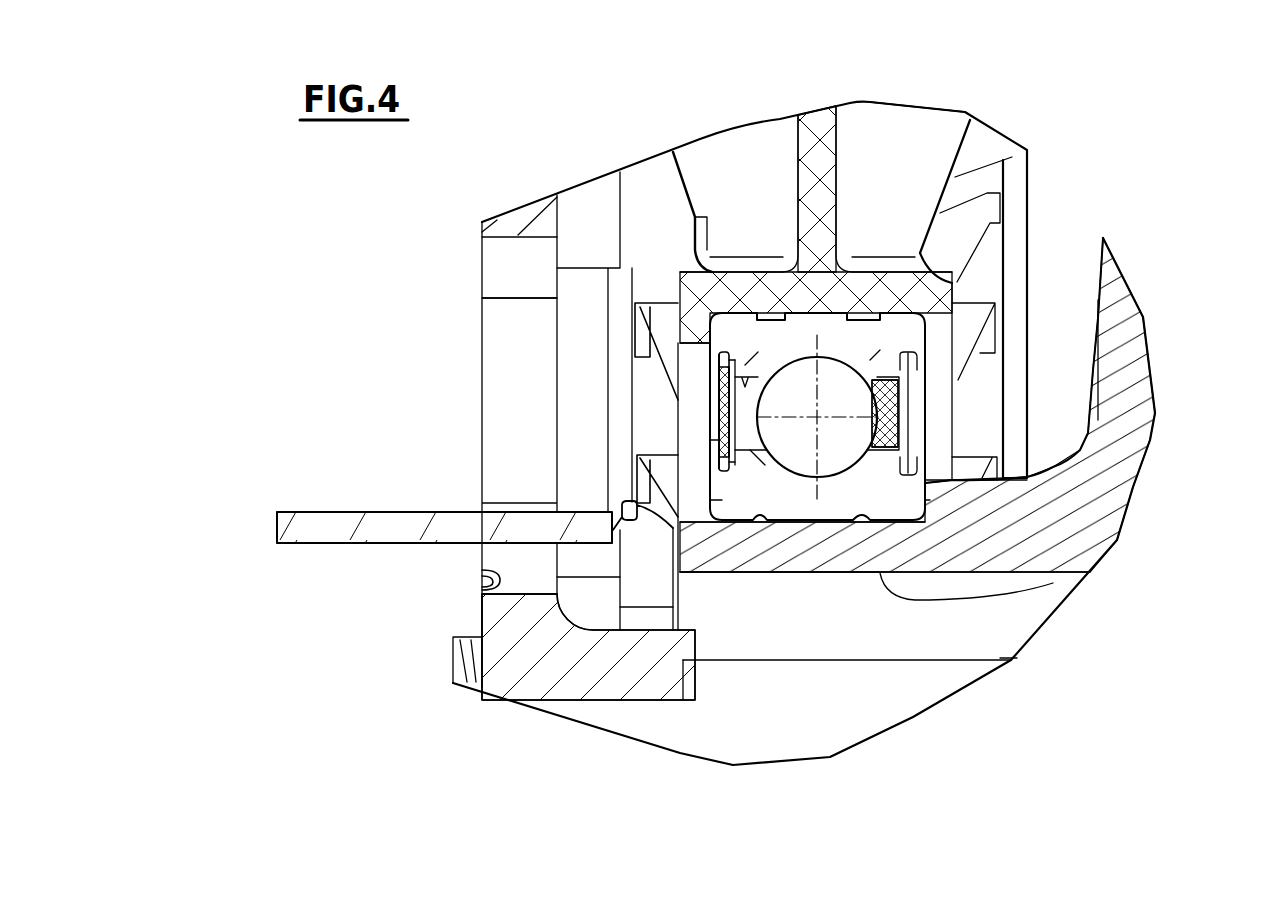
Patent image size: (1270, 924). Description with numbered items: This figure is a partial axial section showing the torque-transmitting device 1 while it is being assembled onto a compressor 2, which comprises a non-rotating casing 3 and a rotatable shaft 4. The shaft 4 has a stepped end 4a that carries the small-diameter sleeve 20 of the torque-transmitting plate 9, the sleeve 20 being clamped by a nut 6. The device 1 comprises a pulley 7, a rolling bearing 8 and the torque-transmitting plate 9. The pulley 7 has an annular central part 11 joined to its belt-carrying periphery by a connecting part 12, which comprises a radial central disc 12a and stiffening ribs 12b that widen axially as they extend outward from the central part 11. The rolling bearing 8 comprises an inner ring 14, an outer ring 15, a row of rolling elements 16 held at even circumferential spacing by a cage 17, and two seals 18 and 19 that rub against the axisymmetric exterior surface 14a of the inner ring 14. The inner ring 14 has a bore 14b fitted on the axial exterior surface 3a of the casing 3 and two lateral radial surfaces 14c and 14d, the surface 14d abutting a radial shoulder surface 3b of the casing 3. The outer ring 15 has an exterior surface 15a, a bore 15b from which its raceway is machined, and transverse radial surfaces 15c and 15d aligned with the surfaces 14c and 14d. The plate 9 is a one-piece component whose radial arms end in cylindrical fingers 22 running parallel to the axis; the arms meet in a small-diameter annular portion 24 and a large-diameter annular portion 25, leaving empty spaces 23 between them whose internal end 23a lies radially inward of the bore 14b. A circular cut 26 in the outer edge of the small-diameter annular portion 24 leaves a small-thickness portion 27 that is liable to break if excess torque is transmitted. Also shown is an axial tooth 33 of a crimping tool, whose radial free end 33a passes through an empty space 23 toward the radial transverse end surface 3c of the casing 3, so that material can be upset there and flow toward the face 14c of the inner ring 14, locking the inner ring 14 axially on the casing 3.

The torque-transmitting device 1 is at (958, 98).
The compressor 2 is at (1125, 278).
The casing 3 is at (1133, 345).
The axial exterior surface 3a is at (870, 590).
The radial surface 3b is at (925, 522).
The radial transverse surface 3c is at (652, 595).
The shaft 4 is at (917, 700).
The stepped end 4a is at (590, 678).
The nut 6 is at (467, 683).
The pulley 7 is at (1010, 215).
The rolling bearing 8 is at (928, 412).
The torque-transmitting plate 9 is at (482, 367).
The annular central part 11 is at (700, 297).
The connecting part 12 is at (843, 122).
The radial central disc 12a is at (820, 178).
The stiffening ribs 12b is at (710, 153).
The inner ring 14 is at (1083, 453).
The axisymmetric exterior surface 14a is at (748, 520).
The bore 14b is at (1053, 583).
The lateral radial surface 14c is at (708, 495).
The lateral radial surface 14d is at (927, 500).
The outer ring 15 is at (930, 338).
The exterior surface 15a is at (835, 330).
The bore 15b is at (742, 360).
The transverse radial surface 15c is at (718, 352).
The transverse radial surface 15d is at (893, 338).
The rolling elements 16 is at (765, 478).
The cage 17 is at (832, 445).
The seal 18 is at (720, 417).
The seal 19 is at (890, 445).
The small-diameter sleeve 20 is at (541, 683).
The fingers 22 is at (643, 185).
The empty spaces 23 is at (517, 392).
The internal end 23a is at (523, 594).
The small-diameter annular portion 24 is at (507, 603).
The large-diameter annular portion 25 is at (512, 235).
The cut 26 is at (488, 582).
The small-thickness portion 27 is at (530, 560).
The axial teeth 33 is at (290, 522).
The radial free end 33a is at (625, 503).